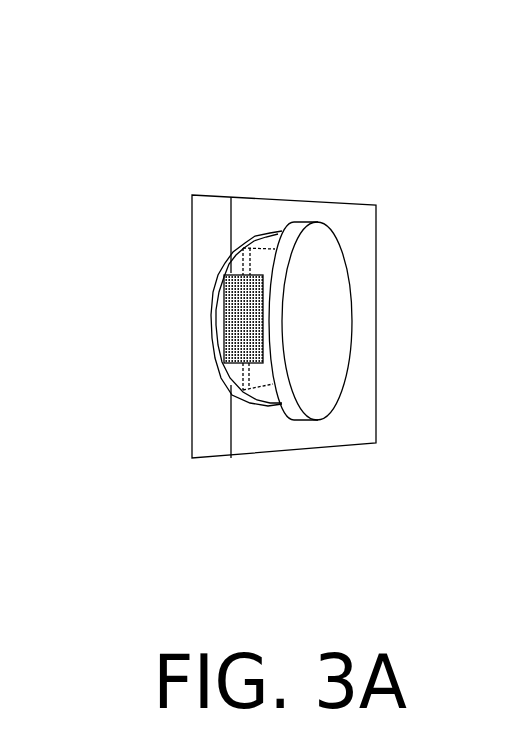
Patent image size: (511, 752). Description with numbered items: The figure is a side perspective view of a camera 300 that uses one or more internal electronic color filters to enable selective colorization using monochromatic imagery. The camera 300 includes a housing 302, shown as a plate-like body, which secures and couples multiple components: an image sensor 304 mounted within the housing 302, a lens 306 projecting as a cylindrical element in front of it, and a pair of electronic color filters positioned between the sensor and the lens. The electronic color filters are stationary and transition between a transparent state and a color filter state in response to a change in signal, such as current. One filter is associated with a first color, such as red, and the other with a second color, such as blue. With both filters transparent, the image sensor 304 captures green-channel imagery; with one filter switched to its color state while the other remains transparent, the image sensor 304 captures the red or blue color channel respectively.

The camera 300 is at (140, 60).
The housing 302 is at (217, 195).
The image sensor 304 is at (225, 273).
The lens 306 is at (347, 282).